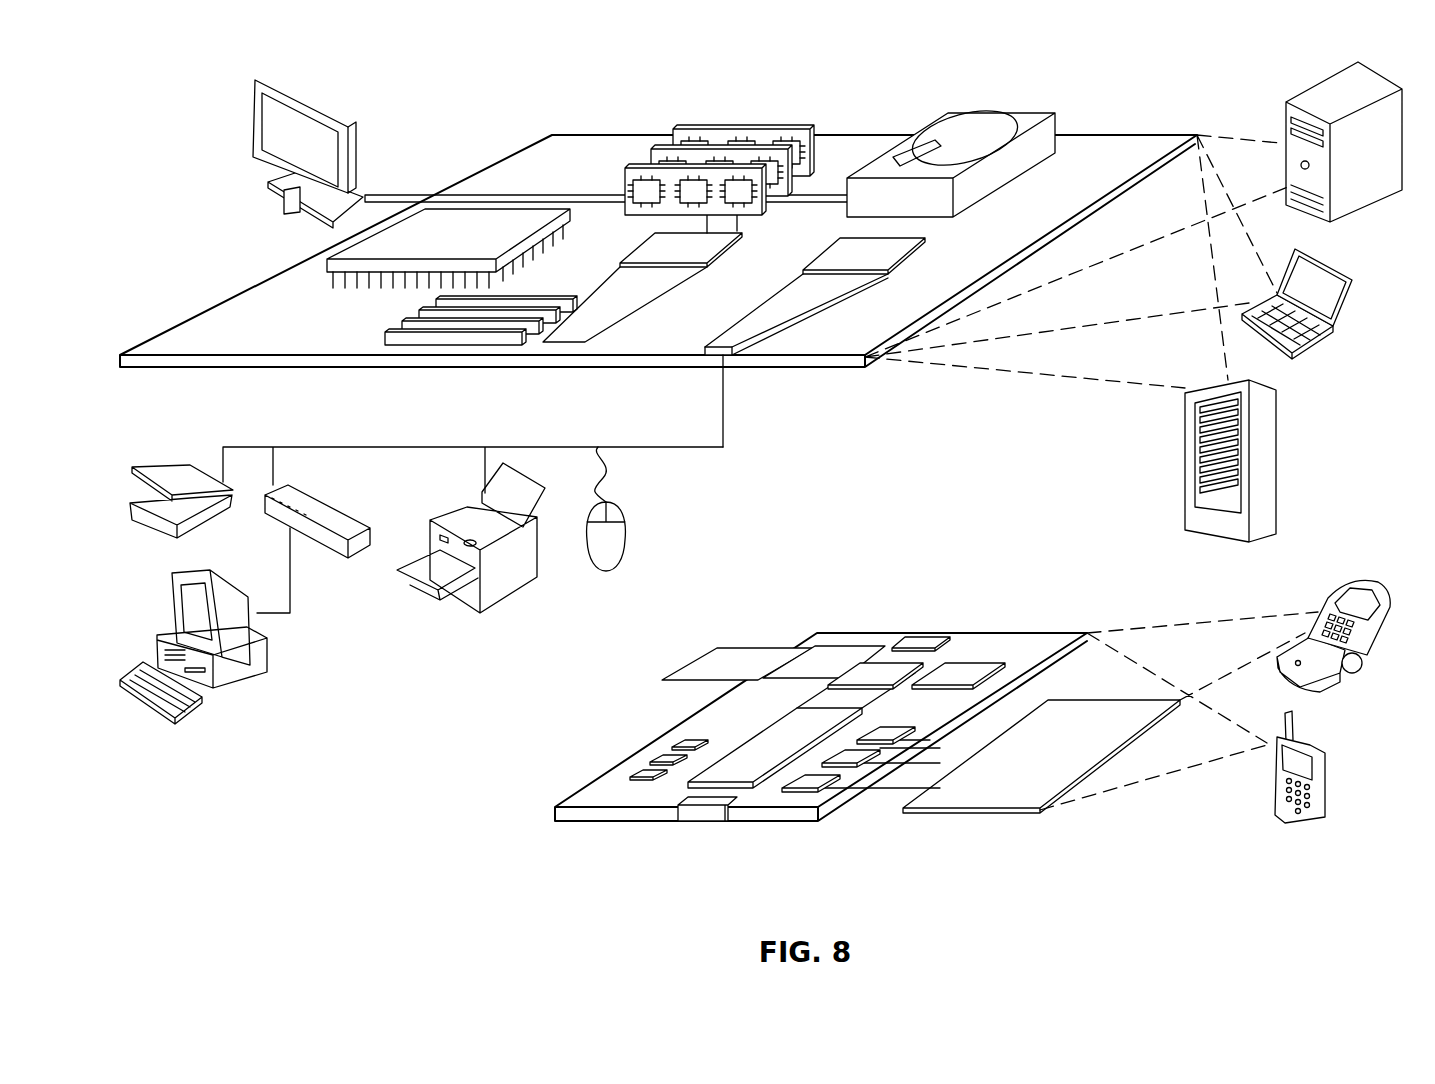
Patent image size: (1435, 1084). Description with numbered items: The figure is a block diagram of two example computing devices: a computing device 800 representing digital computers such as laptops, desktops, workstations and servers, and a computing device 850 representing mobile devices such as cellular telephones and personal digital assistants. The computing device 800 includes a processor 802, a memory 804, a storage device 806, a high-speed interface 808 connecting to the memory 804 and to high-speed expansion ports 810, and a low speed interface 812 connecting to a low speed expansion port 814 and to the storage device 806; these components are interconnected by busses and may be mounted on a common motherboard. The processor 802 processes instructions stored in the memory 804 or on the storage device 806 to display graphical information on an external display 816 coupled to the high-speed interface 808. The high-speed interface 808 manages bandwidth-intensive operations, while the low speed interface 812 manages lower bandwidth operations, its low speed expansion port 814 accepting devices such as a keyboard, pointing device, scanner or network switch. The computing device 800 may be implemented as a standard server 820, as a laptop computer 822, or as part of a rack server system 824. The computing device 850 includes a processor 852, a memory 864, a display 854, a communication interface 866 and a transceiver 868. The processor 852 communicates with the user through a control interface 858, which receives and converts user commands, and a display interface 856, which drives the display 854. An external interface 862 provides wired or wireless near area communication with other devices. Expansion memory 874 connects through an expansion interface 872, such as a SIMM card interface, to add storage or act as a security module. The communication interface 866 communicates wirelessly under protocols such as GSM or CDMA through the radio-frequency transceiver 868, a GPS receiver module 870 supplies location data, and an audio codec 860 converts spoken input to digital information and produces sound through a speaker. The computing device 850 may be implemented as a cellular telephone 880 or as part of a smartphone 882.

The computing device 800 is at (467, 108).
The processor 802 is at (340, 264).
The memory 804 is at (700, 128).
The storage device 806 is at (950, 112).
The high-speed interface 808 is at (655, 243).
The high-speed expansion ports 810 is at (403, 323).
The low speed interface 812 is at (848, 249).
The low speed expansion port 814 is at (733, 356).
The display 816 is at (263, 77).
The standard server 820 is at (1286, 118).
The laptop computer 822 is at (1355, 276).
The rack server system 824 is at (1185, 487).
The computing device 850 is at (530, 816).
The processor 852 is at (745, 772).
The display 854 is at (1002, 792).
The display interface 856 is at (820, 778).
The control interface 858 is at (860, 755).
The audio codec 860 is at (885, 733).
The external interface 862 is at (707, 810).
The memory 864 is at (650, 763).
The communication interface 866 is at (875, 673).
The transceiver 868 is at (960, 673).
The GPS receiver module 870 is at (928, 635).
The expansion interface 872 is at (797, 648).
The expansion memory 874 is at (717, 648).
The cellular telephone 880 is at (1337, 607).
The smartphone 882 is at (1273, 777).